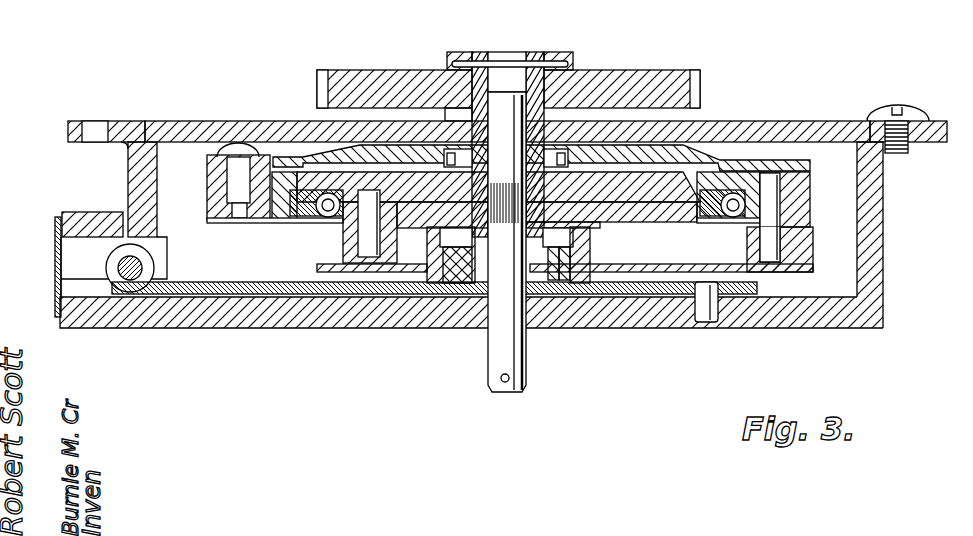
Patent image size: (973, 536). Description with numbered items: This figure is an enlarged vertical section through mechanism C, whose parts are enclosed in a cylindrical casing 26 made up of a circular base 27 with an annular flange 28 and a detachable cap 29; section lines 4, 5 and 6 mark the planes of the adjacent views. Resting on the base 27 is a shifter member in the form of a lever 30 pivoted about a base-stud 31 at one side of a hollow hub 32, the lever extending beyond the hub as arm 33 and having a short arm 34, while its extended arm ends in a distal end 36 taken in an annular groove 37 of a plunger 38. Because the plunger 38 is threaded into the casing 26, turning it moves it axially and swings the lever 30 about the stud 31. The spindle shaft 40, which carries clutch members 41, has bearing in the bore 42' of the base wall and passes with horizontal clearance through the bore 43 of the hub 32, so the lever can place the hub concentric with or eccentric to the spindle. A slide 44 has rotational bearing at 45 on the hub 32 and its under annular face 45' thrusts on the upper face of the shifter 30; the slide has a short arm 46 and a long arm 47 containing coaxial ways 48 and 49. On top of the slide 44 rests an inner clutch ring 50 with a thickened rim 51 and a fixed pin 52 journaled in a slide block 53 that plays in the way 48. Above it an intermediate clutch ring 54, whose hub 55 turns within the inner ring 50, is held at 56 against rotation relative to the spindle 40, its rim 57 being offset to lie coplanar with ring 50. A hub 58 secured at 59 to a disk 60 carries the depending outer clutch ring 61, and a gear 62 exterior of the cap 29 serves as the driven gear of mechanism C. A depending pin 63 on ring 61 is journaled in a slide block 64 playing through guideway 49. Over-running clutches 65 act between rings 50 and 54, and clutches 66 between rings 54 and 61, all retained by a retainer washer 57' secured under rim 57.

The cylindrical casing 26 is at (886, 206).
The circular base 27 is at (803, 326).
The annular flange 28 is at (873, 187).
The detachable cap 29 is at (806, 141).
The lever 30 is at (631, 305).
The base-stud 31 is at (707, 309).
The hollow hub 32 is at (575, 286).
The arm 33 is at (282, 295).
The arm 34 is at (668, 298).
The distal end 36 is at (137, 283).
The annular groove 37 is at (112, 257).
The plunger 38 is at (122, 233).
The spindle shaft 40 is at (493, 353).
The clutch members 41 is at (500, 378).
The washer 42' is at (458, 287).
The bore 43 is at (420, 295).
The slide 44 is at (403, 277).
The rotational bearing 45 is at (553, 314).
The under annular face 45' is at (558, 323).
The arm 46 is at (343, 283).
The arm 47 is at (773, 273).
The way 48 is at (360, 258).
The way 49 is at (659, 254).
The inner clutch ring 50 is at (598, 222).
The thickened rim 51 is at (645, 222).
The fixed pin 52 is at (358, 268).
The slide block 53 is at (356, 250).
The intermediate clutch ring 54 is at (683, 145).
The hub 55 is at (537, 231).
The holding connection 56 is at (498, 224).
The rim 57 is at (723, 209).
The retainer washer 57' is at (274, 247).
The hub 58 is at (482, 80).
The securing point 59 is at (480, 163).
The disk 60 is at (303, 157).
The outer clutch ring 61 is at (220, 177).
The gear 62 is at (317, 84).
The depending pin 63 is at (803, 176).
The slide block 64 is at (795, 250).
The over-running clutches 65 is at (300, 223).
The over-running clutches 66 is at (731, 221).
The mechanism C is at (920, 227).
The section line 4 is at (217, 268).
The section line 5 is at (217, 225).
The section line 6 is at (205, 203).